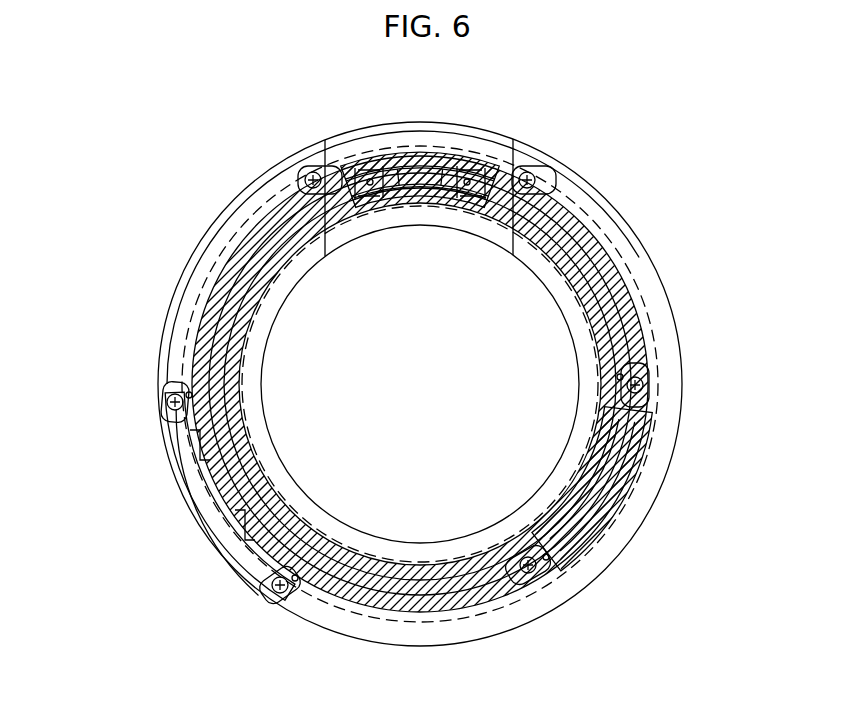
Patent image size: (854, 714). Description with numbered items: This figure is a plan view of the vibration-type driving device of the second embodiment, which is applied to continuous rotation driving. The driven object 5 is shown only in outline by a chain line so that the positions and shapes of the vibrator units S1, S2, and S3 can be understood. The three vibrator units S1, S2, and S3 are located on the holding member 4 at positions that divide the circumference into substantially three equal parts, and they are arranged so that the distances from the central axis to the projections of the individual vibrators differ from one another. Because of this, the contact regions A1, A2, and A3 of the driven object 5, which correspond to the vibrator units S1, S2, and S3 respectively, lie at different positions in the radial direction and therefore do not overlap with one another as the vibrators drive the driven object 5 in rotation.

The holding member 4 is at (668, 387).
The driven object 5 is at (628, 264).
The contact region A1 is at (267, 247).
The contact region A2 is at (232, 303).
The contact region A3 is at (195, 343).
The vibrator unit S1 is at (437, 152).
The vibrator unit S2 is at (640, 465).
The vibrator unit S3 is at (203, 503).